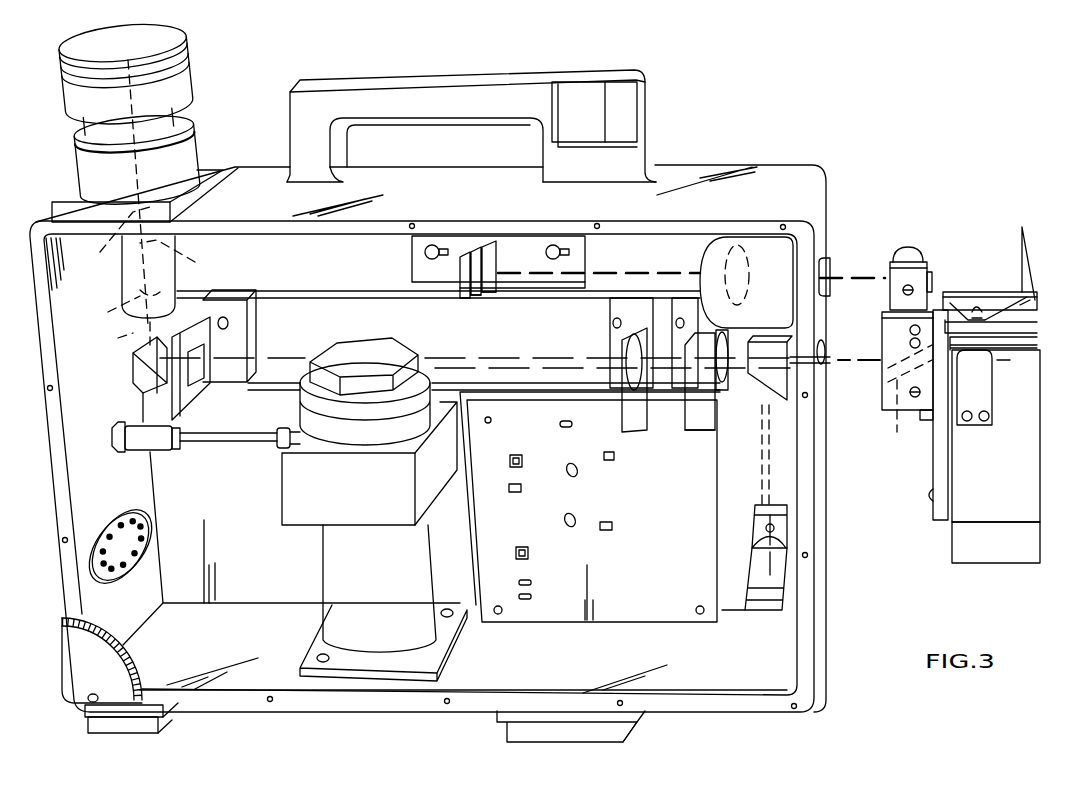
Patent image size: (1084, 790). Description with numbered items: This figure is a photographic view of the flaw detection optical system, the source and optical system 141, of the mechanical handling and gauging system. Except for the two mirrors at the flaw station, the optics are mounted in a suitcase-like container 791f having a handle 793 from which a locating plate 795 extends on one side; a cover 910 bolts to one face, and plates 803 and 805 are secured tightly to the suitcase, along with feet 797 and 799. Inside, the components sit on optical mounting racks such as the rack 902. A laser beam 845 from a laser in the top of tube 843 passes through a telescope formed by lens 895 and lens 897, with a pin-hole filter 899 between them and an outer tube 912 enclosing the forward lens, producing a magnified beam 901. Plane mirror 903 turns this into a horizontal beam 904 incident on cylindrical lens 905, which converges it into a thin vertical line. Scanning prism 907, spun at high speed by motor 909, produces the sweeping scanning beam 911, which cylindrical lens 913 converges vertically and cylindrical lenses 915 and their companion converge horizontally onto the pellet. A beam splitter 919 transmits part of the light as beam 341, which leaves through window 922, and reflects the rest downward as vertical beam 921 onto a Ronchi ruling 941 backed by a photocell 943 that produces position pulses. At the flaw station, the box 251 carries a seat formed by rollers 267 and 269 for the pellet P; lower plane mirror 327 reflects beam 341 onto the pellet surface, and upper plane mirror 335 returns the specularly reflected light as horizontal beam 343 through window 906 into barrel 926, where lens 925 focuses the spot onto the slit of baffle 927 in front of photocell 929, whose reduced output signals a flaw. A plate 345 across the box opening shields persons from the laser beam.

The source and optical system 141 is at (802, 140).
The container 791f is at (822, 500).
The handle 793 is at (488, 93).
The locating plate 795 is at (637, 105).
The base plate 797 is at (144, 700).
The foot 799 is at (632, 714).
The plate 803 is at (112, 722).
The plate 805 is at (523, 728).
The tube 843 is at (185, 83).
The laser beam 845 is at (137, 172).
The lens 895 is at (115, 239).
The lens 897 is at (121, 306).
The pin-hole filter 899 is at (181, 256).
The beam 901 is at (121, 335).
The rack 902 is at (297, 302).
The plane mirror 903 is at (140, 378).
The horizontal beam 904 is at (143, 400).
The cylindrical lens 905 is at (200, 370).
The window 906 is at (829, 268).
The scanning prism 907 is at (353, 347).
The motor 909 is at (297, 489).
The cover 910 is at (78, 677).
The scanning beam 911 is at (493, 370).
The outer tube 912 is at (177, 279).
The cylindrical lens 913 is at (627, 412).
The cylindrical lens 915 is at (697, 440).
The beam splitter 919 is at (768, 362).
The vertical beam 921 is at (765, 470).
The window 922 is at (825, 370).
The lens 925 is at (724, 250).
The barrel 926 is at (783, 260).
The baffle 927 is at (490, 247).
The photocell 929 is at (463, 295).
The Ronchi ruling 941 is at (757, 574).
The photocell 943 is at (752, 612).
The box 251 is at (1003, 487).
The roller 267 is at (962, 305).
The roller 269 is at (1027, 302).
The pellet P is at (976, 312).
The plane mirror 327 is at (900, 420).
The plane mirror 335 is at (897, 250).
The scanning beam 341 is at (830, 366).
The scanning beam 343 is at (858, 280).
The plate 345 is at (1035, 283).